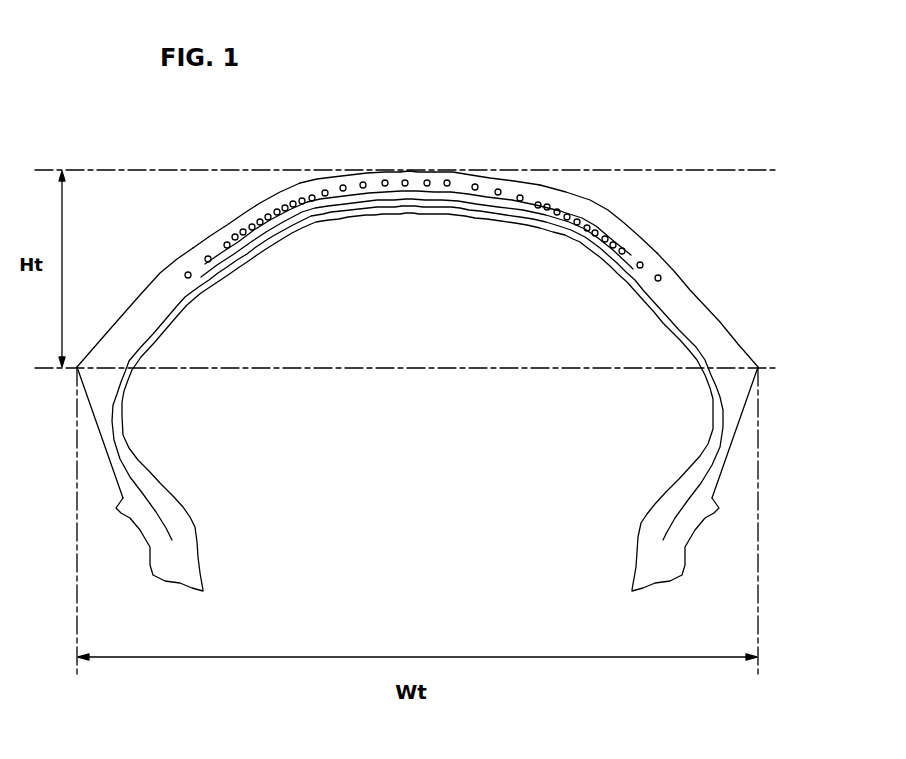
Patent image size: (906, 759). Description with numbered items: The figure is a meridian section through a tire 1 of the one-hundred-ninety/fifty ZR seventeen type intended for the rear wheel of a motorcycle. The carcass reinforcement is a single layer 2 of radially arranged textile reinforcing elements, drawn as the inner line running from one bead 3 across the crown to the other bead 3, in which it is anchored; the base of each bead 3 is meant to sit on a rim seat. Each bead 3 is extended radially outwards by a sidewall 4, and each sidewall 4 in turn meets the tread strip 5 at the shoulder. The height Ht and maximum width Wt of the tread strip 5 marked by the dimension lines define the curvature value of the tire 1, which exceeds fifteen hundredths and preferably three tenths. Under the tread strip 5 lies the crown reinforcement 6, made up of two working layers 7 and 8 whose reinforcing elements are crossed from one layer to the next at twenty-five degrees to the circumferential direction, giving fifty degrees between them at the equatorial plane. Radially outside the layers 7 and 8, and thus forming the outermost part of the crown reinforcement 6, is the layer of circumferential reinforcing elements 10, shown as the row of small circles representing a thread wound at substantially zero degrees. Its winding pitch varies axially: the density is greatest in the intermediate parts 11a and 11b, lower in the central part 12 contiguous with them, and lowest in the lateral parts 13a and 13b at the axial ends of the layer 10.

The tire 1 is at (474, 134).
The carcass reinforcement layer 2 is at (688, 500).
The bead 3 is at (185, 560).
The sidewall 4 is at (98, 421).
The tread strip 5 is at (329, 173).
The crown reinforcement 6 is at (677, 303).
The working layer 7 is at (220, 257).
The working layer 8 is at (528, 213).
The layer of circumferential reinforcing elements 10 is at (193, 276).
The intermediate part 11a is at (261, 192).
The intermediate part 11b is at (611, 210).
The central part 12 is at (407, 162).
The lateral part 13a is at (180, 243).
The lateral part 13b is at (680, 250).